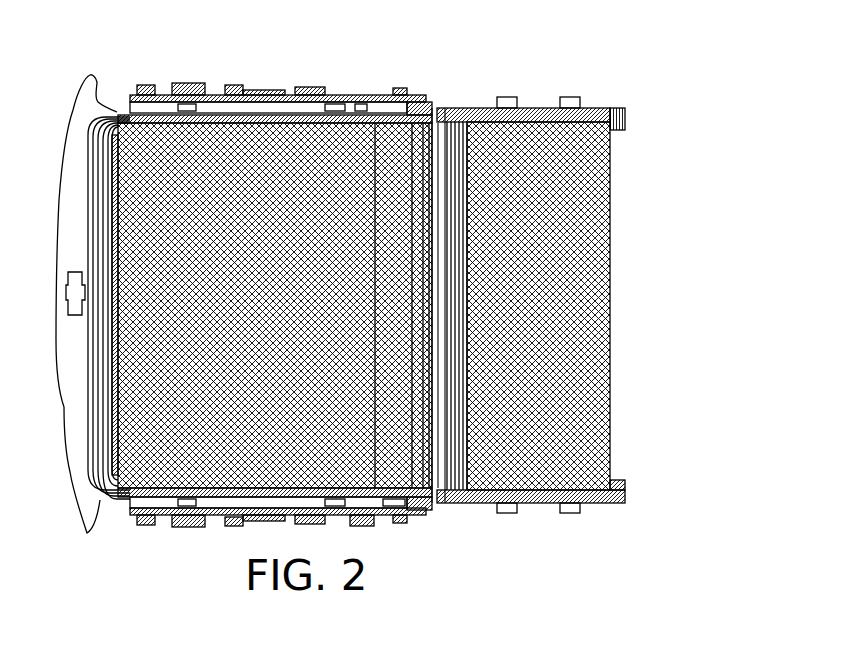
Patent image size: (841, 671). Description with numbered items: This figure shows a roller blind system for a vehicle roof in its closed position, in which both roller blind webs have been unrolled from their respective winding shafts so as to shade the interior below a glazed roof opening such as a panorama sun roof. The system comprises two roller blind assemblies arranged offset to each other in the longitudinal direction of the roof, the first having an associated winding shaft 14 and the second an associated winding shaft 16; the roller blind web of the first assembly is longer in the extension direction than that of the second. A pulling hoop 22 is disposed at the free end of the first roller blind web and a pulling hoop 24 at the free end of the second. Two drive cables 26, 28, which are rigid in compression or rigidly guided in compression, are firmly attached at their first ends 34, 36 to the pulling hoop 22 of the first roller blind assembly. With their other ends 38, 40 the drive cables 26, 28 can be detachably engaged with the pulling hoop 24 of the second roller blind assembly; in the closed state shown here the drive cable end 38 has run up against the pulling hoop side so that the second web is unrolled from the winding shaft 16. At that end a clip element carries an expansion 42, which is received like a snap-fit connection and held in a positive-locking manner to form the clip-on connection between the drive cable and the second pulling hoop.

The winding shaft 14 is at (442, 493).
The winding shaft 16 is at (438, 143).
The pulling hoop 22 is at (118, 503).
The pulling hoop 24 is at (610, 170).
The drive cable 26 is at (585, 100).
The drive cable 28 is at (587, 505).
The first end 34 is at (127, 500).
The first end 36 is at (118, 112).
The end 38 is at (627, 115).
The end 40 is at (627, 495).
The expansion 42 is at (627, 489).